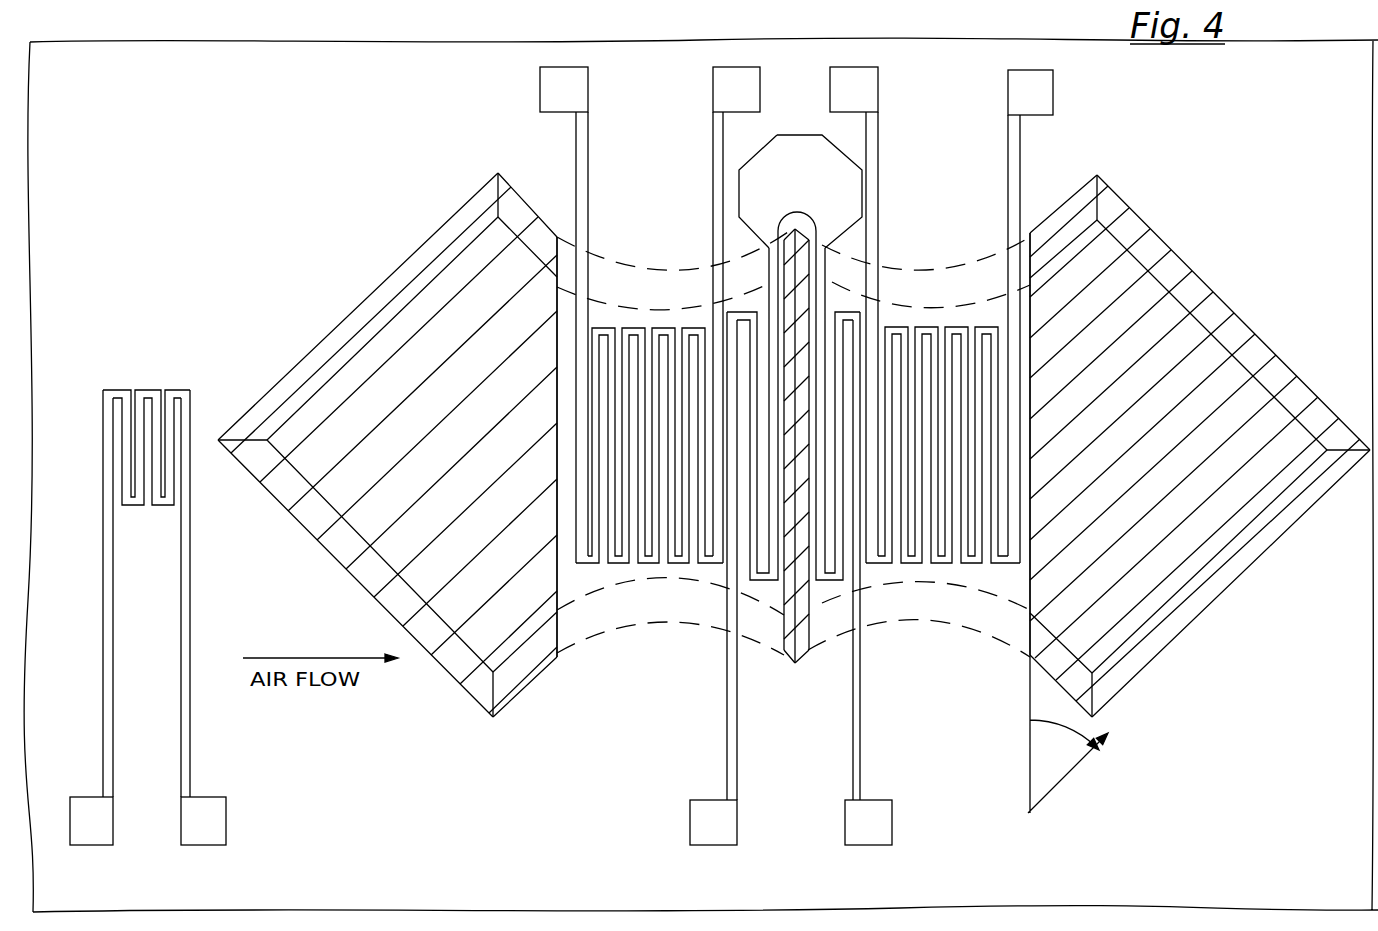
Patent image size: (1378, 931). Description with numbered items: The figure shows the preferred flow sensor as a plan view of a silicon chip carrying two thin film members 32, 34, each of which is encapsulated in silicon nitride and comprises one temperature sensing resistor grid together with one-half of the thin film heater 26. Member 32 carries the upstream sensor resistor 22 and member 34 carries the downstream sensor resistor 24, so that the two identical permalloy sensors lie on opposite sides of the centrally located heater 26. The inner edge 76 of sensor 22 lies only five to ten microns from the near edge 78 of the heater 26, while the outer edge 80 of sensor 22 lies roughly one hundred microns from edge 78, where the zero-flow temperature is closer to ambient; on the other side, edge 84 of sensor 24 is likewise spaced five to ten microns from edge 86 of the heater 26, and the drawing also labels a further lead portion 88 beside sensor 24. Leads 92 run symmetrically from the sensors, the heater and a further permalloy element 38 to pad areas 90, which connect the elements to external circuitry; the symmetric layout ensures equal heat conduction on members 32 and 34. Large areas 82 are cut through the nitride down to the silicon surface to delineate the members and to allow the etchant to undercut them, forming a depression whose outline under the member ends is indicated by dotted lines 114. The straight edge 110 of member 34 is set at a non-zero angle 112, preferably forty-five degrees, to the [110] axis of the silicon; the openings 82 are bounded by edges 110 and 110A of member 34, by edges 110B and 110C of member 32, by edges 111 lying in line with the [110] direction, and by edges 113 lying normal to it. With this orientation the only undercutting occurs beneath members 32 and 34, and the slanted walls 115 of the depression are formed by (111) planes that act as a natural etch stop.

The upstream sensor resistor 22 is at (674, 563).
The downstream sensor resistor 24 is at (943, 563).
The heater resistor grid 26 is at (812, 192).
The thin film member 32 is at (600, 598).
The thin film member 34 is at (1022, 594).
The permalloy element 38 is at (148, 392).
The inner edge of sensor resistor 76 is at (723, 124).
The near edge of heater resistor grid 78 is at (727, 712).
The outer edge of sensor resistor grid 80 is at (576, 420).
The openings 82 is at (445, 444).
The edge of sensor 84 is at (866, 138).
The edge of heater 86 is at (860, 740).
The lead 88 is at (1020, 432).
The pad areas 90 is at (575, 102).
The leads 92 is at (713, 122).
The straight edge of member 110 is at (1030, 330).
The edge of member 110A is at (868, 268).
The edge of member 110B is at (768, 296).
The edge of member 110C is at (557, 363).
The edges of openings 111 is at (370, 295).
The angle 112 is at (1030, 747).
The edges of openings 113 is at (527, 205).
The dotted lines 114 is at (905, 268).
The slanted walls of depression 115 is at (541, 236).